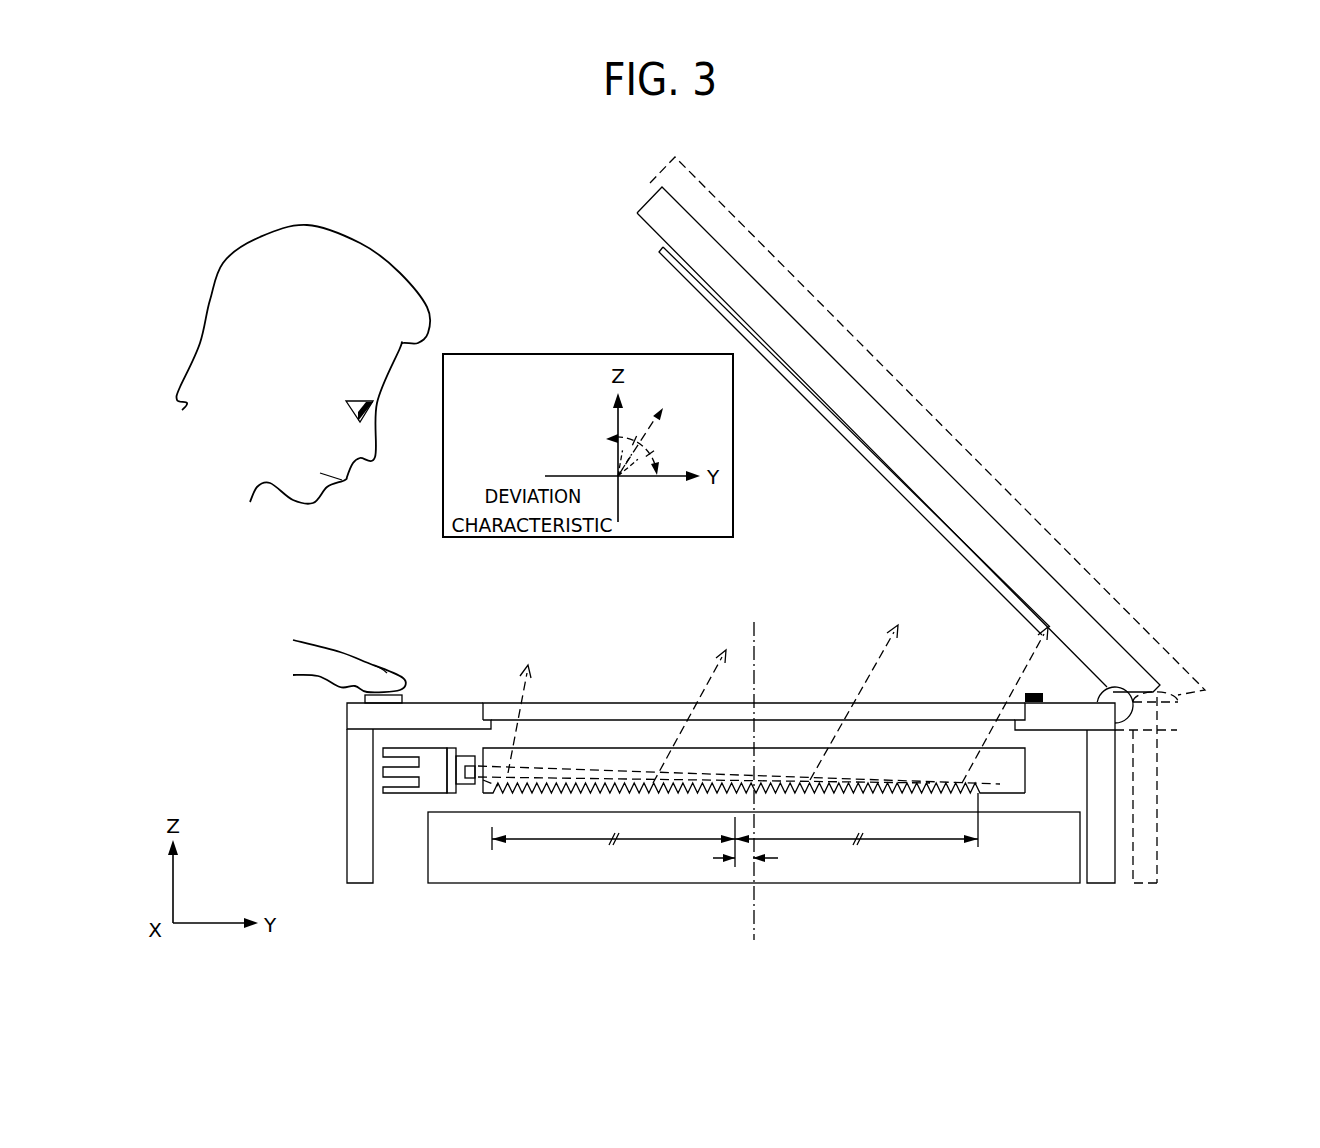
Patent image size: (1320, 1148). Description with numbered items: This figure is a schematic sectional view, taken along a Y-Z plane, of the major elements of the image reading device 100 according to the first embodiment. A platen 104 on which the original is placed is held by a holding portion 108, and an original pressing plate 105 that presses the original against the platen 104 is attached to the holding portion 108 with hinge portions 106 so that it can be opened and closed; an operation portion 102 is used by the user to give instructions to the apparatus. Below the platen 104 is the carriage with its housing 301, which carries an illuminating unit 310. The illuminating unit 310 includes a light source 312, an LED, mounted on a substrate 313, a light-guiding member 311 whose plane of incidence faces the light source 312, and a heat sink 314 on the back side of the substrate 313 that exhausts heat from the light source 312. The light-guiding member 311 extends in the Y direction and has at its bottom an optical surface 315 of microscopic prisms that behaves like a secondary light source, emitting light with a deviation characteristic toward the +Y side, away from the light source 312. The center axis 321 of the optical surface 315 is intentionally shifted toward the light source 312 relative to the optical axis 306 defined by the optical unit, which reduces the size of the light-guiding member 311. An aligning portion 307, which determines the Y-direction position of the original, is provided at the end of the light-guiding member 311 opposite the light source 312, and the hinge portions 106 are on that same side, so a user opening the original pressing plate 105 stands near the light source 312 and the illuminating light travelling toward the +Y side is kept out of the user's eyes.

The image reading device 100 is at (810, 171).
The operation portion 102 is at (395, 698).
The platen 104 is at (583, 708).
The original pressing plate 105 is at (990, 543).
The hinge portions 106 is at (1133, 718).
The holding portion 108 is at (353, 718).
The housing 301 is at (593, 876).
The optical axis 306 is at (756, 893).
The aligning portion 307 is at (1025, 682).
The illuminating unit 310 is at (783, 793).
The light-guiding member 311 is at (945, 762).
The light source 312 is at (460, 784).
The substrate 313 is at (450, 793).
The heat sink 314 is at (397, 793).
The optical surface 315 is at (888, 793).
The center axis 321 is at (735, 866).